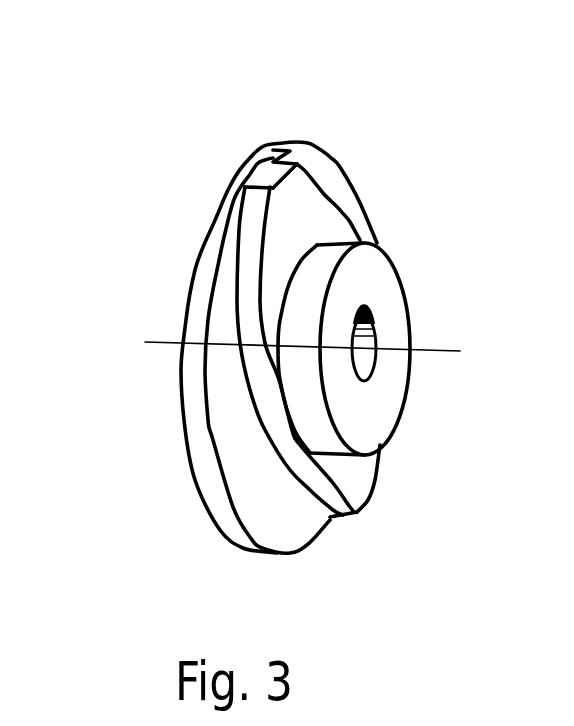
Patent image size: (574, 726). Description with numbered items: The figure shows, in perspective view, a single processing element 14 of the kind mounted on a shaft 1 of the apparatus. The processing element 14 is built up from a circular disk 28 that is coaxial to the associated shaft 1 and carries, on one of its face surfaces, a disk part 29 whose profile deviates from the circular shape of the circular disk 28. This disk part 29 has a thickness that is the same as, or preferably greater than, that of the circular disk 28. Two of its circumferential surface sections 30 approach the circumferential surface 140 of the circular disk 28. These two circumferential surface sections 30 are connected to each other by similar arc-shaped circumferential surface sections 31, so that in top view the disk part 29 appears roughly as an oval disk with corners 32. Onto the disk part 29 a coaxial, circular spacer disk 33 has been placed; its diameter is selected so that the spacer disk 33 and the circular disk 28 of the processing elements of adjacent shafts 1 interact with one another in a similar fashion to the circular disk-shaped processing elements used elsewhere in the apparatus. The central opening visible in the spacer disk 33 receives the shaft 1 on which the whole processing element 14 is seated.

The shaft 1 is at (367, 358).
The processing element 14 is at (187, 514).
The circular disk 28 is at (222, 335).
The disk part 29 is at (298, 210).
The circumferential surface section 30 is at (266, 162).
The arc-shaped circumferential surface section 31 is at (257, 262).
The corner 32 is at (297, 142).
The spacer disk 33 is at (370, 298).
The circumferential surface 140 is at (193, 408).